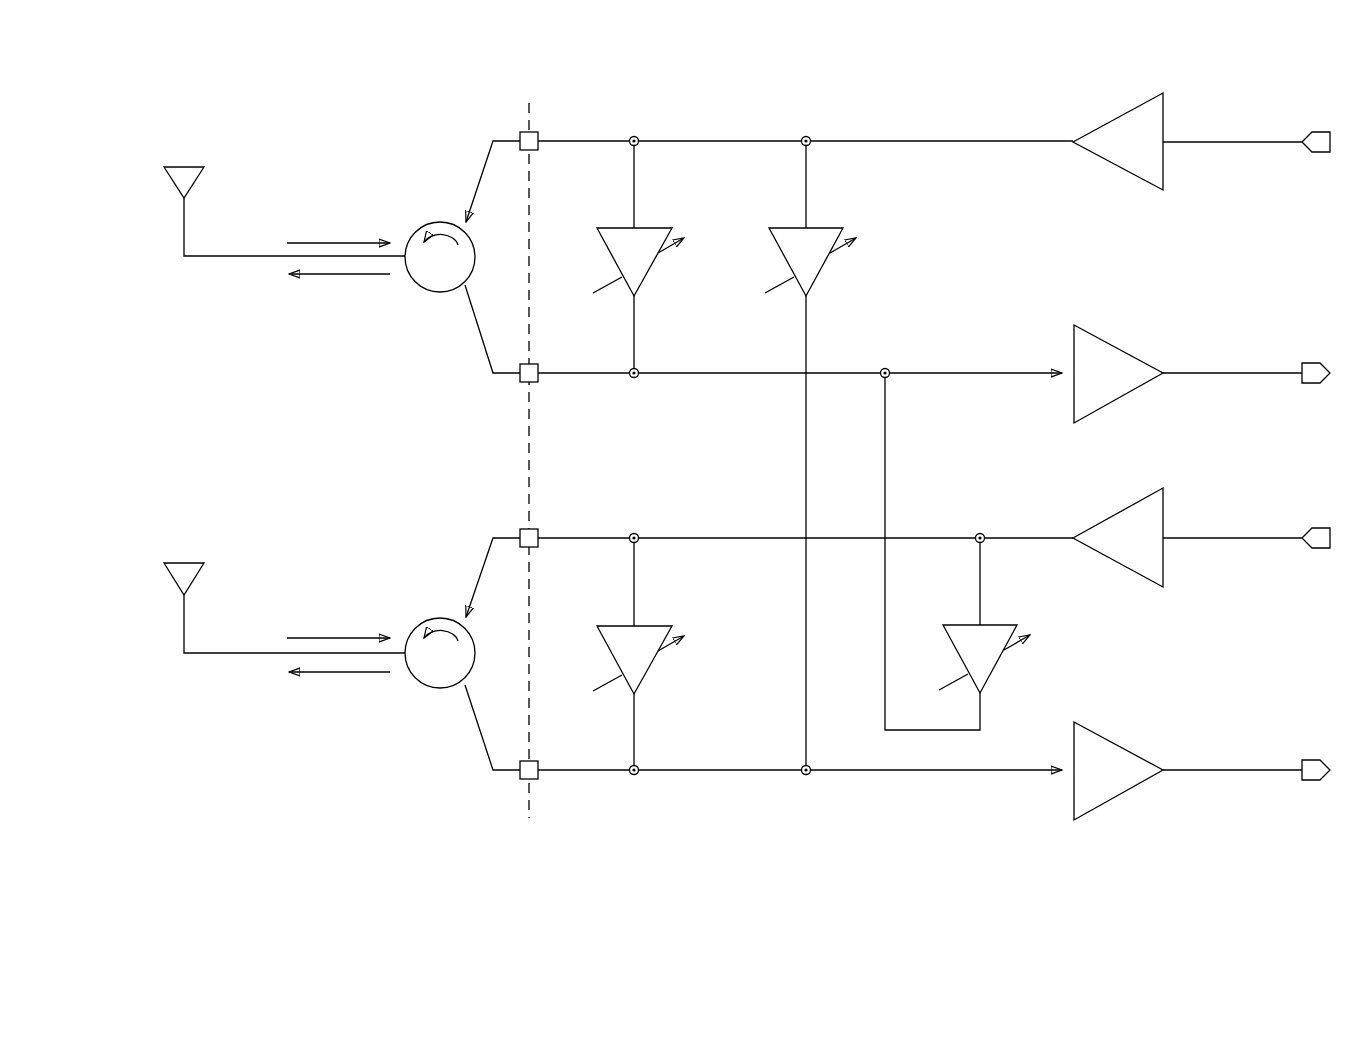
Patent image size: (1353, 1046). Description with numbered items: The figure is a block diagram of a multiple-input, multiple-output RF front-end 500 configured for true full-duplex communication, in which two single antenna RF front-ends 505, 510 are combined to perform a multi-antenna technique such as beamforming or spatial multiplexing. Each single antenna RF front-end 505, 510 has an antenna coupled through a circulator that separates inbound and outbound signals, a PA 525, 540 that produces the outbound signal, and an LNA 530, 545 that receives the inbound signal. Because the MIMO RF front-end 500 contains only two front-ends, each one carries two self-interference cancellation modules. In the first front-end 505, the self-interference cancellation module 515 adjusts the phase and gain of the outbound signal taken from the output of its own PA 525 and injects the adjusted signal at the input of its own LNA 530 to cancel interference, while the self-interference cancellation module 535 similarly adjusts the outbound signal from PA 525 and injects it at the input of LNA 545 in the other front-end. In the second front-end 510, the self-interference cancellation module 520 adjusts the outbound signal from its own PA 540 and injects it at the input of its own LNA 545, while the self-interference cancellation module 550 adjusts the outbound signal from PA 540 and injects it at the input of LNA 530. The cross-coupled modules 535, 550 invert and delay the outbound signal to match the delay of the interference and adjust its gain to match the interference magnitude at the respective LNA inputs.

The MIMO RF front-end 500 is at (285, 848).
The single antenna RF front-end 505 is at (150, 123).
The single antenna RF front-end 510 is at (150, 524).
The self-interference cancellation module 515 is at (610, 248).
The self-interference cancellation module 520 is at (610, 645).
The PA 525 is at (1103, 168).
The LNA 530 is at (1122, 347).
The self-interference cancellation module 535 is at (782, 248).
The PA 540 is at (1103, 560).
The LNA 545 is at (1122, 740).
The self-interference cancellation module 550 is at (955, 645).